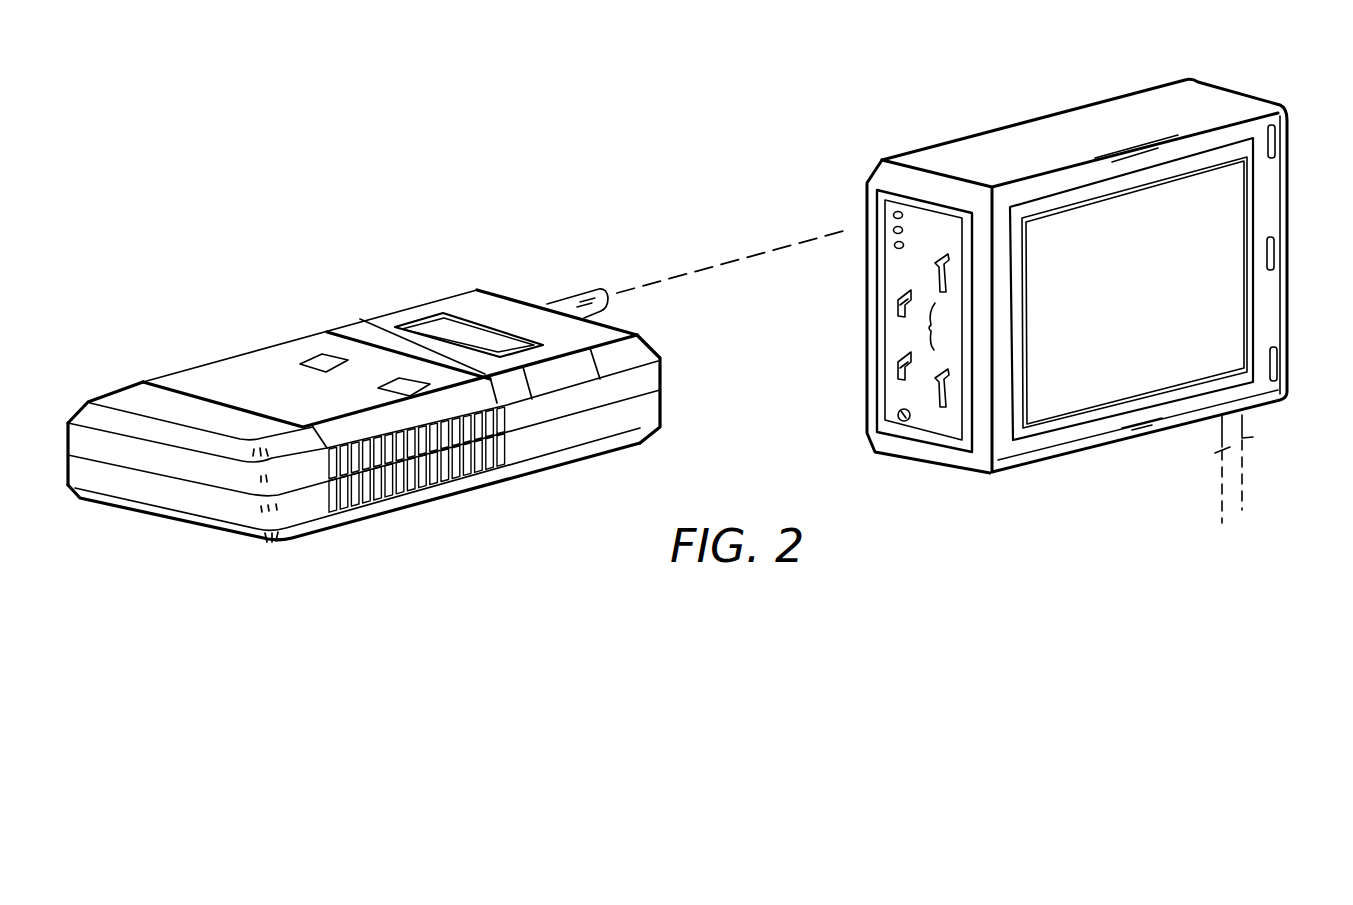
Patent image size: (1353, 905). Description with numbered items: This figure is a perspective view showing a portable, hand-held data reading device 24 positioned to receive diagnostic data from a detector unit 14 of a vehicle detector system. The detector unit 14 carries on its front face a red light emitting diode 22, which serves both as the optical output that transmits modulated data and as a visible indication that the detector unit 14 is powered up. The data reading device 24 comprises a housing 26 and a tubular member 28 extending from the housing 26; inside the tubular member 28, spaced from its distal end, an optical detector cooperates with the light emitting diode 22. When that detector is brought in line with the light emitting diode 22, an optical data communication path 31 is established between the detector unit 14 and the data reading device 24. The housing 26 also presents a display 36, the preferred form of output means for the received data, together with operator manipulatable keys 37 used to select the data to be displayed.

The detector unit 14 is at (1299, 173).
The light emitting diode 22 is at (894, 217).
The data reading device 24 is at (484, 268).
The housing 26 is at (537, 437).
The tubular member 28 is at (576, 300).
The optical data communication path 31 is at (707, 264).
The display 36 is at (433, 333).
The operator manipulatable keys 37 is at (390, 387).